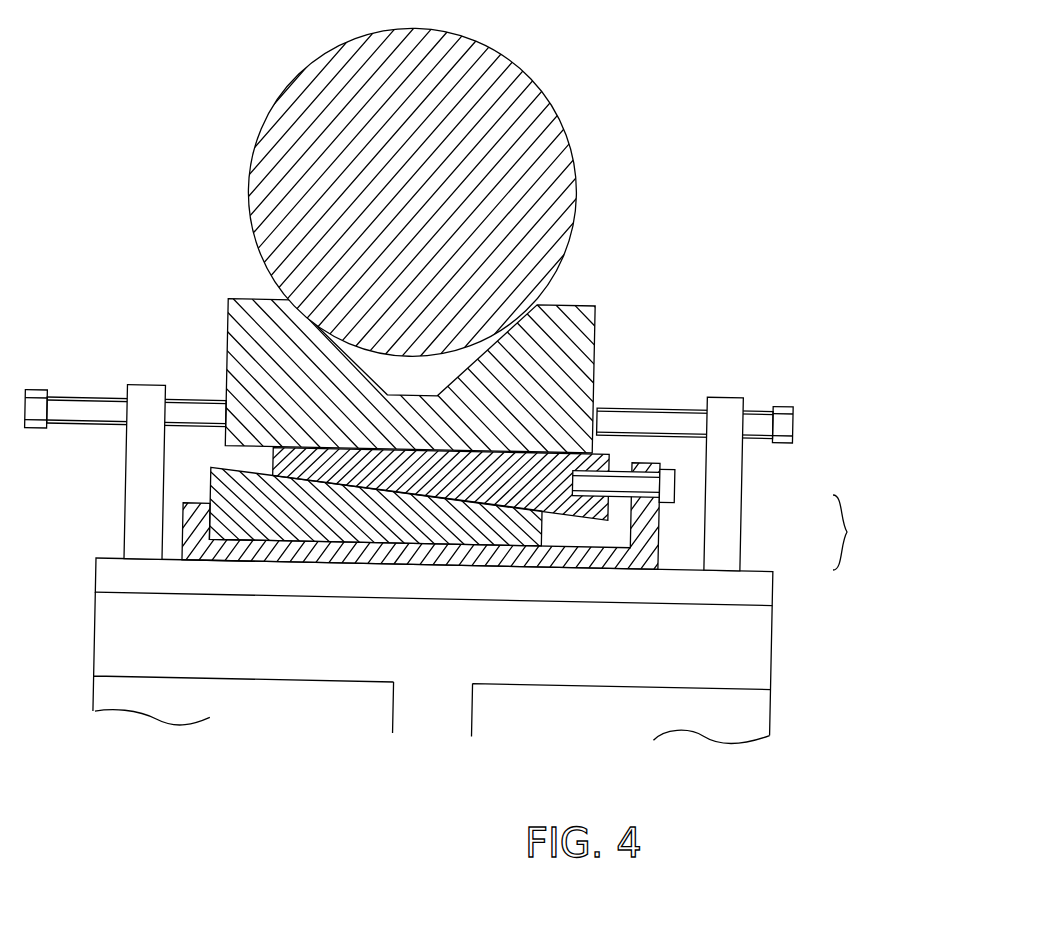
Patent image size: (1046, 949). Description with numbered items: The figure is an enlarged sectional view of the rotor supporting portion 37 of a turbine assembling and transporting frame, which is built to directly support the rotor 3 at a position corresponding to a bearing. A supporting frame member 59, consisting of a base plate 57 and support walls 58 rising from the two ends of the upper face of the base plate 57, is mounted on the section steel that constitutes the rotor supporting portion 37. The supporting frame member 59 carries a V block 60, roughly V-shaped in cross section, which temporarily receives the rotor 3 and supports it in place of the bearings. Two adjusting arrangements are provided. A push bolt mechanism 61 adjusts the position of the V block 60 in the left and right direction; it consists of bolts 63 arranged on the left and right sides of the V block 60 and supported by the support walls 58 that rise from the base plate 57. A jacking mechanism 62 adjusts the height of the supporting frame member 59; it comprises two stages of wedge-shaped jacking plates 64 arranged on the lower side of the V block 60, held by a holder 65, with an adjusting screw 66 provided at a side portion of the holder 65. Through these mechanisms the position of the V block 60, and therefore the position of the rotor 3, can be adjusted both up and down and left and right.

The rotor 3 is at (513, 60).
The rotor supporting portion 37 is at (795, 634).
The base plate 57 is at (750, 575).
The support walls 58 is at (142, 503).
The supporting frame member 59 is at (862, 532).
The V block 60 is at (553, 312).
The push bolt mechanism 61 is at (679, 386).
The jacking mechanism 62 is at (682, 575).
The bolts 63 is at (80, 398).
The wedge-shaped jacking plates 64 is at (473, 490).
The holder 65 is at (328, 560).
The adjusting screw 66 is at (620, 473).